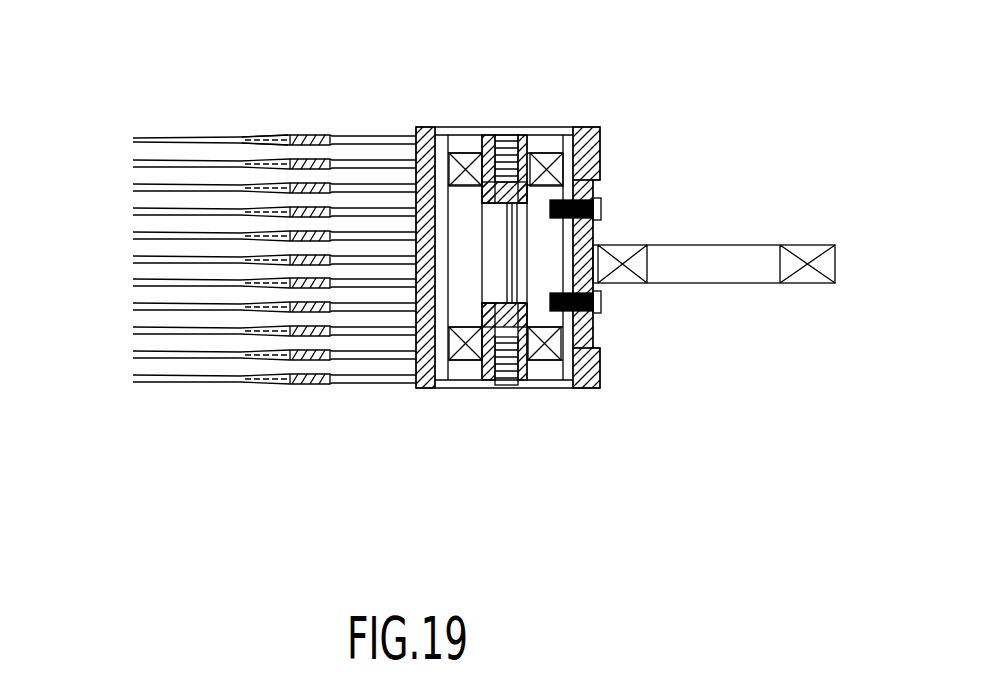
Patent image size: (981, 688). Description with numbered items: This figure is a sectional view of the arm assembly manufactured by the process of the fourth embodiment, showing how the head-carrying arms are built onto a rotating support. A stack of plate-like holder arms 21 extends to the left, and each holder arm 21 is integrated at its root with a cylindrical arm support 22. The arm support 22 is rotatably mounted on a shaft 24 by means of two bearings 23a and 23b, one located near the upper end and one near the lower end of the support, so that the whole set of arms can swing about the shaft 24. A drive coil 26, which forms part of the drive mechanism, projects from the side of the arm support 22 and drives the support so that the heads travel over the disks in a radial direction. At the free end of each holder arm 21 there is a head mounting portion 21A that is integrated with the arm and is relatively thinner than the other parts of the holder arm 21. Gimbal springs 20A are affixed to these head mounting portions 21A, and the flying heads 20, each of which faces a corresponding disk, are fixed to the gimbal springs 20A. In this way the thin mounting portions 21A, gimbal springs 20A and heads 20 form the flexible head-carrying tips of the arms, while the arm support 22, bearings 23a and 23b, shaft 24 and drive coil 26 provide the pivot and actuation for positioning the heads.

The flying head 20 is at (133, 142).
The gimbal spring 20A is at (190, 138).
The holder arm 21 is at (333, 135).
The head mounting portion 21A is at (267, 137).
The arm support 22 is at (602, 150).
The bearing 23a is at (543, 153).
The bearing 23b is at (565, 387).
The shaft 24 is at (480, 387).
The drive coil 26 is at (796, 245).